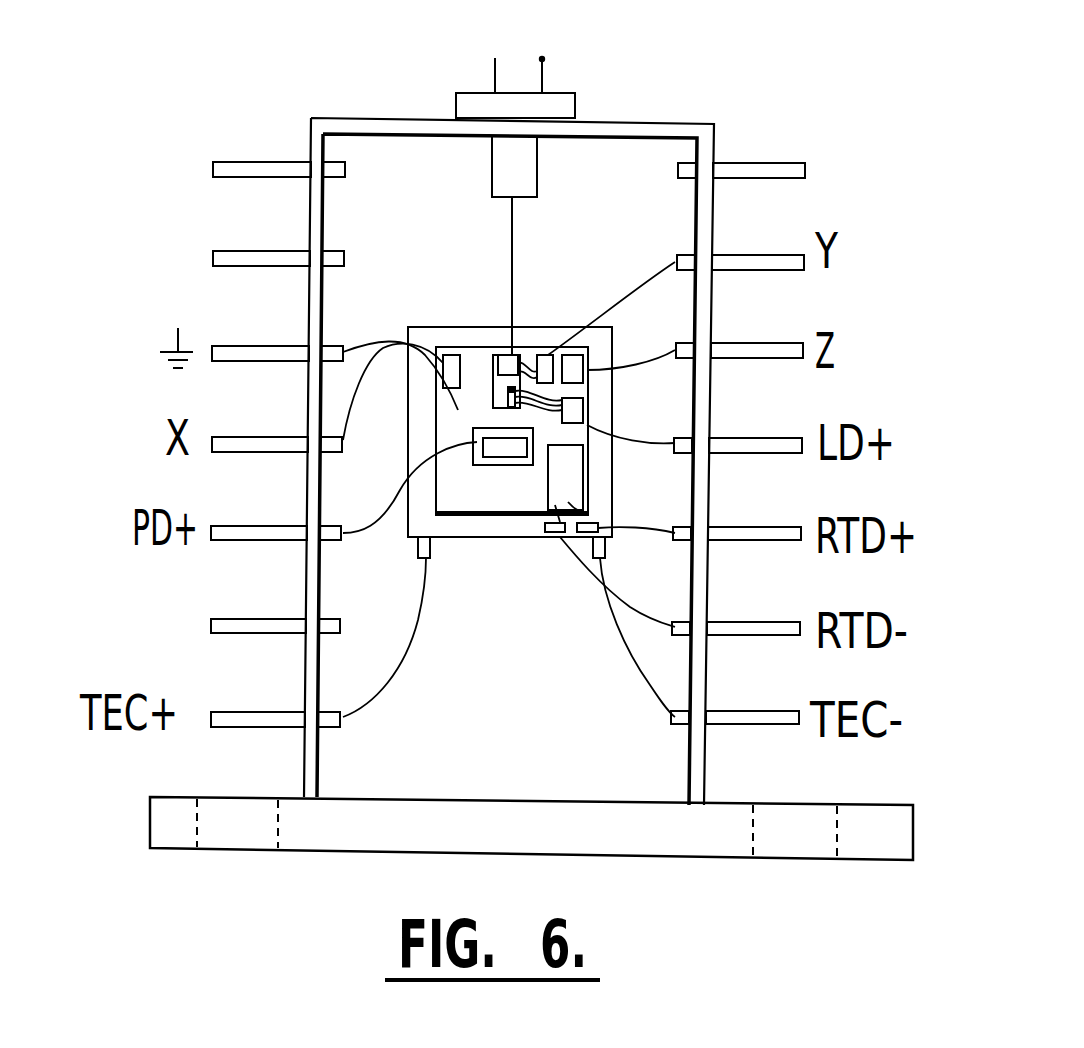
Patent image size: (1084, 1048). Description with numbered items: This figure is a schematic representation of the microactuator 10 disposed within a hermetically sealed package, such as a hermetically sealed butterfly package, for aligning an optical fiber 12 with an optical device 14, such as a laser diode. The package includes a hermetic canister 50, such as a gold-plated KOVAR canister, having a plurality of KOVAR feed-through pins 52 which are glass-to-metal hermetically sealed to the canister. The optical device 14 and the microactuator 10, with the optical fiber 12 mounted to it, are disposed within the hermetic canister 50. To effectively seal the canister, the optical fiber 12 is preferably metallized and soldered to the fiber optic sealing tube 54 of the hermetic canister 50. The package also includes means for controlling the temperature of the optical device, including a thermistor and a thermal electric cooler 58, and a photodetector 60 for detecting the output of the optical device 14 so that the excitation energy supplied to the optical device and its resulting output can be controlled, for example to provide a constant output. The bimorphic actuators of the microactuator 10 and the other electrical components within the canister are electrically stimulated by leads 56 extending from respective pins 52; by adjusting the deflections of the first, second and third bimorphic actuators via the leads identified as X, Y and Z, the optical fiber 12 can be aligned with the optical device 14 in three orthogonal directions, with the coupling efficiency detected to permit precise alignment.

The microactuator 10 is at (490, 345).
The optical fiber 12 is at (513, 252).
The optical device 14 is at (493, 398).
The hermetic canister 50 is at (651, 128).
The feed-through pins 52 is at (783, 343).
The fiber optic sealing tube 54 is at (542, 77).
The leads 56 is at (397, 344).
The thermal electric cooler 58 is at (536, 537).
The photodetector 60 is at (498, 447).